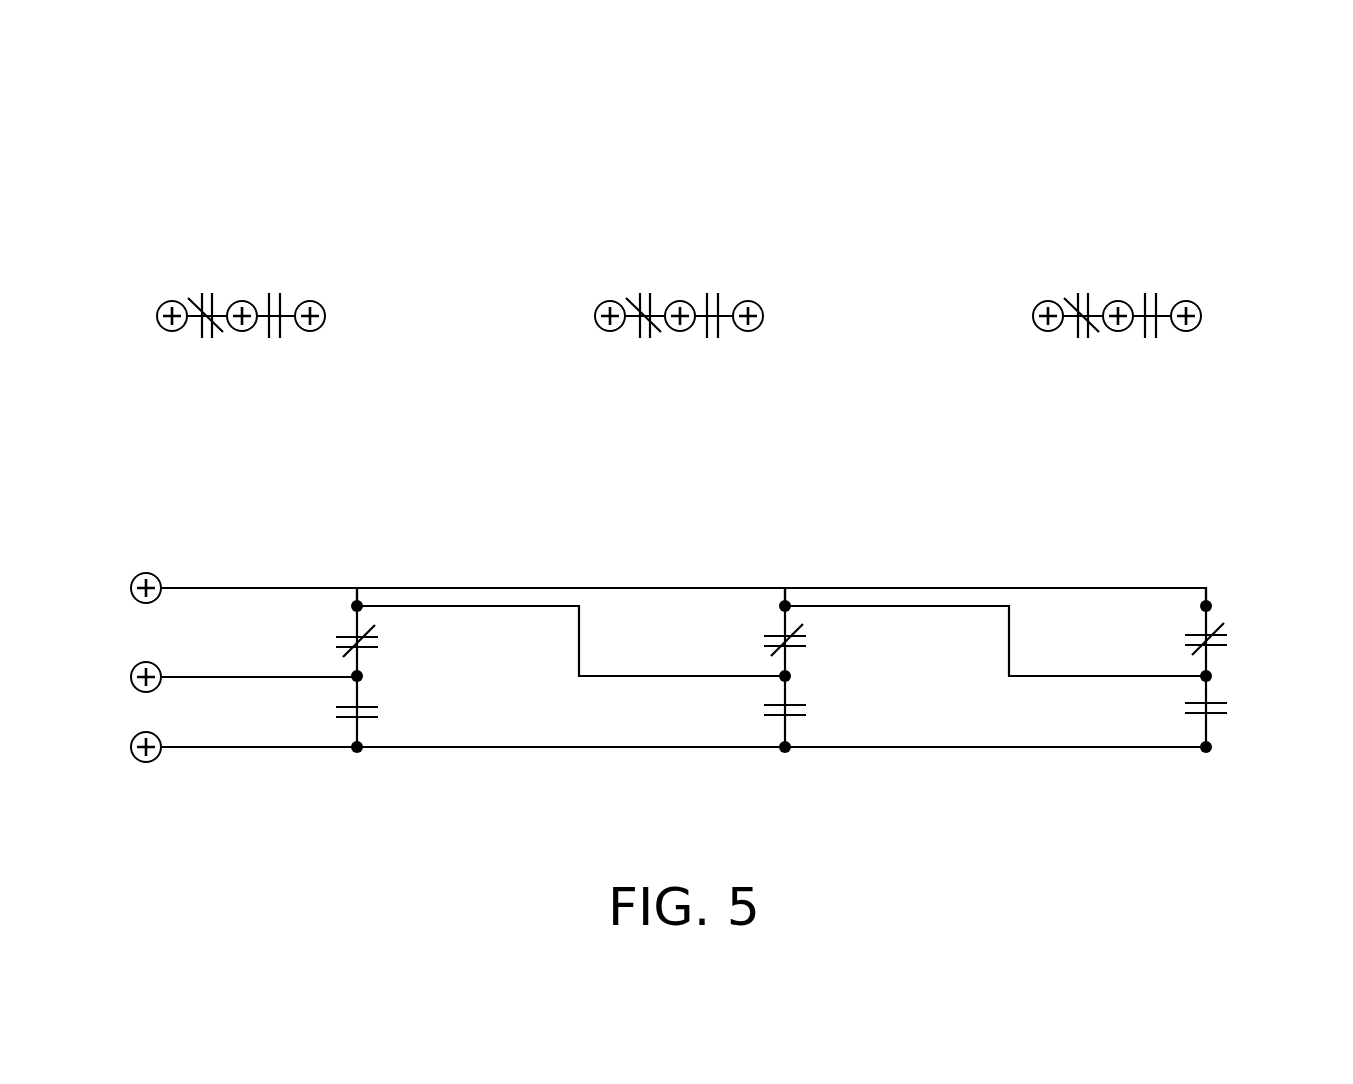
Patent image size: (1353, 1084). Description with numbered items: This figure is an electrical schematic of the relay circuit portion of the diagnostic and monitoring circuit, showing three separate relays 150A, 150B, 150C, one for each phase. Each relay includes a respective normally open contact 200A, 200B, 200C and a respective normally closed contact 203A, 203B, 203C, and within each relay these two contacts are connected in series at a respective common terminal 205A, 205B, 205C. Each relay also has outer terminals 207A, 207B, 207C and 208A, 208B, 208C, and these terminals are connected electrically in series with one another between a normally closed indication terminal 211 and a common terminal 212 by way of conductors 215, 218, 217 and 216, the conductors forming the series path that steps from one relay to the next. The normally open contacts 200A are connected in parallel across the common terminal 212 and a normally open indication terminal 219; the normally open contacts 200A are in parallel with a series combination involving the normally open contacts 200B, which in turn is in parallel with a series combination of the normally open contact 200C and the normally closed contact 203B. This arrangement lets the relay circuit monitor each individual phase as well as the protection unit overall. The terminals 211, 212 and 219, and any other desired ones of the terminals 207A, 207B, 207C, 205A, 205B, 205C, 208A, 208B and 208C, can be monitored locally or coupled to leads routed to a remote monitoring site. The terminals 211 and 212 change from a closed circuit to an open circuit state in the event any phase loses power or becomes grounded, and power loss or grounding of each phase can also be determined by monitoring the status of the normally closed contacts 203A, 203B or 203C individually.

The relay 150A is at (196, 192).
The relay 150B is at (634, 192).
The relay 150C is at (1072, 192).
The terminal 207A is at (157, 317).
The terminal 207B is at (595, 317).
The terminal 207C is at (1033, 317).
The normally closed contact 203A is at (202, 338).
The normally closed contact 203B is at (640, 338).
The normally closed contact 203C is at (1078, 338).
The common terminal 205A is at (242, 333).
The common terminal 205B is at (680, 333).
The common terminal 205C is at (1118, 333).
The normally open contact 200A is at (277, 338).
The normally open contact 200B is at (715, 338).
The normally open contact 200C is at (1153, 338).
The terminal 208A is at (320, 328).
The terminal 208B is at (758, 328).
The terminal 208C is at (1196, 328).
The normally closed indication terminal 211 is at (137, 578).
The common terminal 212 is at (137, 667).
The normally open indication terminal 219 is at (152, 762).
The conductor 215 is at (247, 588).
The conductor 218 is at (257, 678).
The conductor 217 is at (642, 678).
The conductor 216 is at (1040, 677).